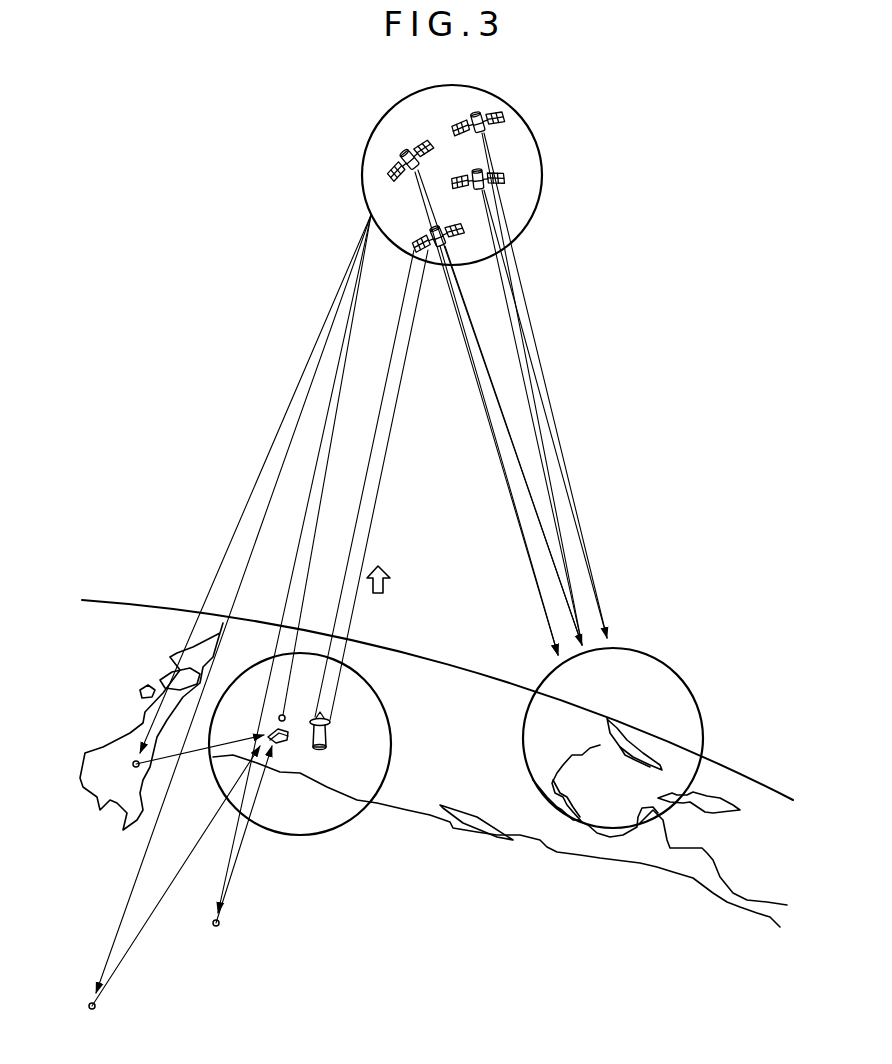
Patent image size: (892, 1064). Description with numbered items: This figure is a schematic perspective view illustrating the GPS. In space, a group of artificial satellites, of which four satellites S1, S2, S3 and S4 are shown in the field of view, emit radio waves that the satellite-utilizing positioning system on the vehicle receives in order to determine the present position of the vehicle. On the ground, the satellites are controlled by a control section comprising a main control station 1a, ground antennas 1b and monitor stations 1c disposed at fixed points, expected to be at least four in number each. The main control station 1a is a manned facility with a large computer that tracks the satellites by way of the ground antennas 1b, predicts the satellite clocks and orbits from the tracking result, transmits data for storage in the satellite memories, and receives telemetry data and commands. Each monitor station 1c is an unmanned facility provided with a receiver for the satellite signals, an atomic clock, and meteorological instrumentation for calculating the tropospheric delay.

The satellite S1 is at (410, 150).
The satellite S2 is at (476, 113).
The satellite S3 is at (436, 226).
The satellite S4 is at (484, 170).
The main control station 1a is at (278, 748).
The ground antenna 1b is at (330, 727).
The monitor station 1c is at (285, 716).